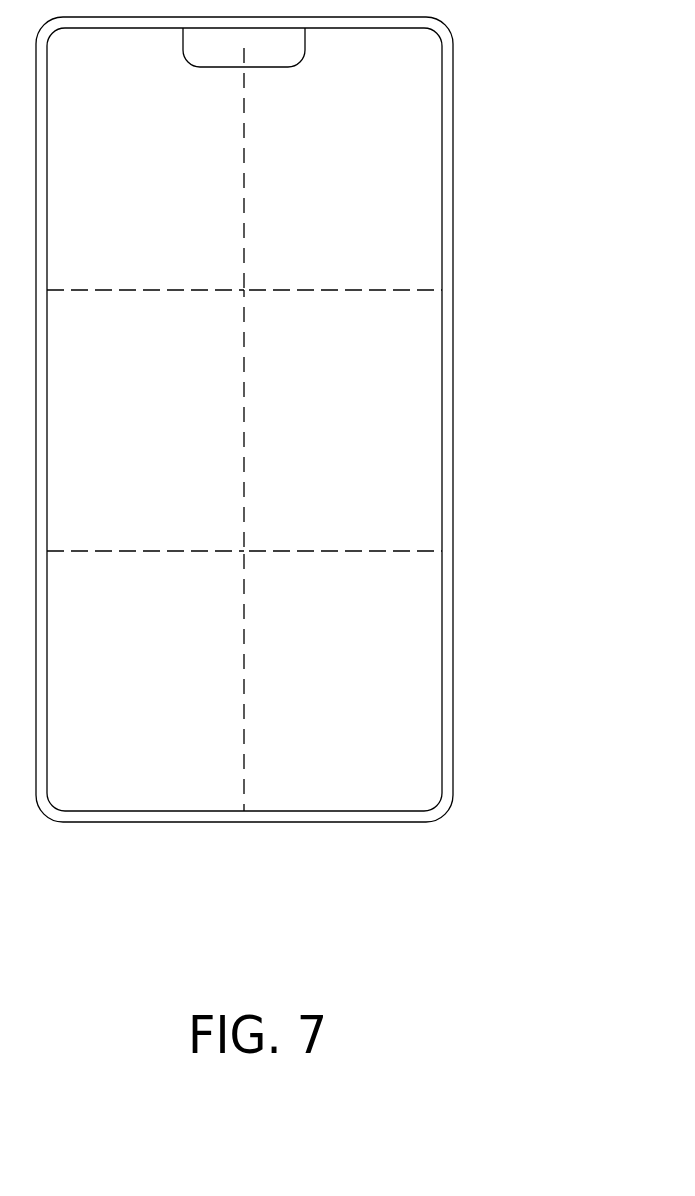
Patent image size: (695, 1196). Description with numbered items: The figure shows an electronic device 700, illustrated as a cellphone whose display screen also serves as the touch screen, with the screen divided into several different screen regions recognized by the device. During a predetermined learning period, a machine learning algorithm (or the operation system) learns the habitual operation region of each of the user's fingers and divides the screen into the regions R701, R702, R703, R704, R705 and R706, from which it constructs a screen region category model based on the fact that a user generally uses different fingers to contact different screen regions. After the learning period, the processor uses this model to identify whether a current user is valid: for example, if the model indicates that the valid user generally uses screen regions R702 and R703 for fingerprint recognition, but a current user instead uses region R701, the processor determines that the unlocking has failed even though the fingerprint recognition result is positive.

The electronic device 700 is at (453, 389).
The screen region R701 is at (145, 169).
The screen region R702 is at (145, 420).
The screen region R703 is at (175, 681).
The screen region R704 is at (343, 217).
The screen region R705 is at (343, 478).
The screen region R706 is at (335, 682).